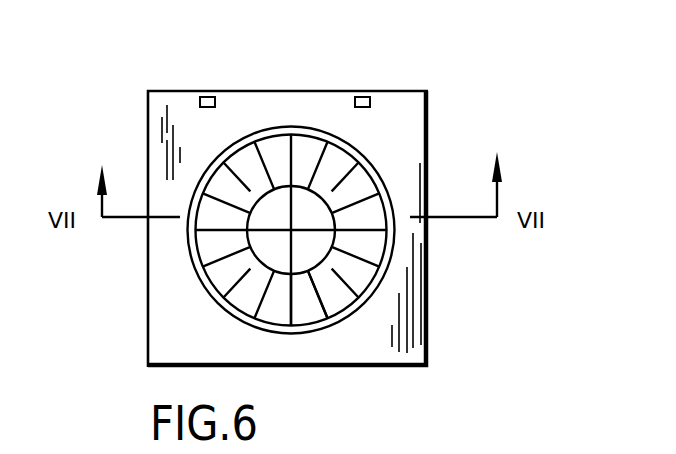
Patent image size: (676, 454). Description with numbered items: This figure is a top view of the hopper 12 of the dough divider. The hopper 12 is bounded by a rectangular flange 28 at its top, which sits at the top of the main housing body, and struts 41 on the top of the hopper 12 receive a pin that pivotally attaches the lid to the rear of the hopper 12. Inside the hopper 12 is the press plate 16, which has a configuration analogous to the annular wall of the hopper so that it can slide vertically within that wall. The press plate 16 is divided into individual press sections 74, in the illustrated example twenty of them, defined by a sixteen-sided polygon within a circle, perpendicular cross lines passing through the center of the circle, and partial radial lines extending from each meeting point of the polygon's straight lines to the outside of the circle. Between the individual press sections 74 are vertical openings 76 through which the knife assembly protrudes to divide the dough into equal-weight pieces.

The hopper 12 is at (317, 219).
The press plate 16 is at (259, 107).
The rectangular flange 28 is at (413, 137).
The struts 41 is at (206, 97).
The individual press sections 74 is at (303, 148).
The vertical openings 76 is at (313, 292).